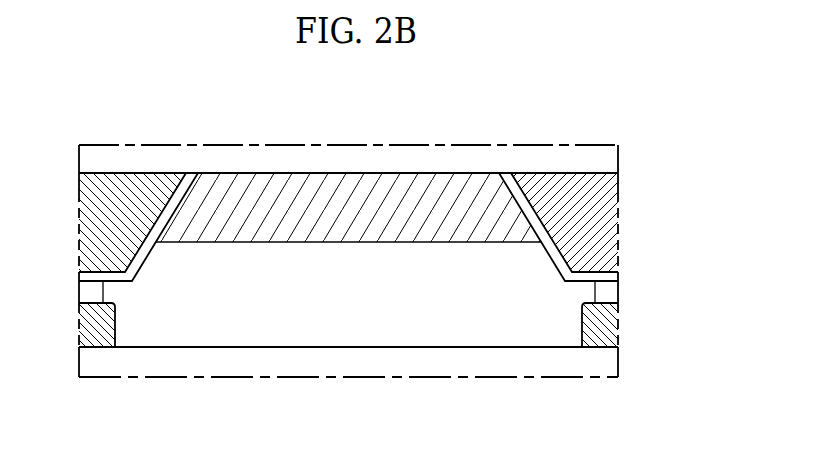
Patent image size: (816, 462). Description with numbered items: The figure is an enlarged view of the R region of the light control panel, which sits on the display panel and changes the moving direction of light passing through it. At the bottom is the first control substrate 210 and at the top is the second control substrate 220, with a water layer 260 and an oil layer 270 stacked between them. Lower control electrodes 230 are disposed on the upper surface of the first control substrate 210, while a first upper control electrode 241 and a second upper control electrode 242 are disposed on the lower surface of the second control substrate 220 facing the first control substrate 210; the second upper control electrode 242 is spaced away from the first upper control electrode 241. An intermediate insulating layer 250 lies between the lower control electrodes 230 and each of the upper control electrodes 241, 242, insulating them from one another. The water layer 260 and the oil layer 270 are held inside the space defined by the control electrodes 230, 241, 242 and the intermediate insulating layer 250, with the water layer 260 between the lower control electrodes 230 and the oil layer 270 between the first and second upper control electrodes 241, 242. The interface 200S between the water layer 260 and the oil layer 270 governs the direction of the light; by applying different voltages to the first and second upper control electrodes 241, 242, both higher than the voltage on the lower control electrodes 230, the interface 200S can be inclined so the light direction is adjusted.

The R region R is at (171, 144).
The first control substrate 210 is at (608, 364).
The second control substrate 220 is at (608, 162).
The lower control electrodes 230 is at (610, 328).
The first upper control electrode 241 is at (607, 222).
The second upper control electrode 242 is at (92, 233).
The intermediate insulating layer 250 is at (605, 293).
The water layer 260 is at (348, 334).
The oil layer 270 is at (370, 205).
The interface 200S is at (228, 243).